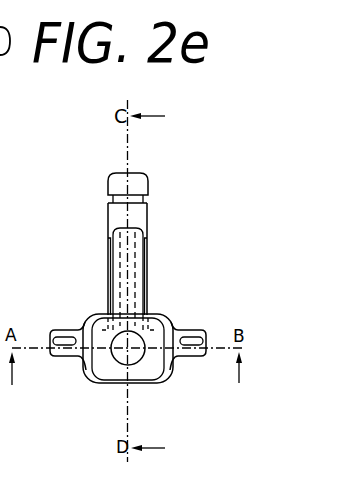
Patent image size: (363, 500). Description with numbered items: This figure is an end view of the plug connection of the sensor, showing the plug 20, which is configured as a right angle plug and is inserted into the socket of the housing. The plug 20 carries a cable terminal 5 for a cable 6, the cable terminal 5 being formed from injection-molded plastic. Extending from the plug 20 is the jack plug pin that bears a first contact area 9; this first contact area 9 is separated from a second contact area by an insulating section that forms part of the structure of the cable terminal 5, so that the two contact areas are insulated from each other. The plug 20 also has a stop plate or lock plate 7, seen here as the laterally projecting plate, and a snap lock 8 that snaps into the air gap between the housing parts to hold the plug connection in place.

The cable terminal 5 is at (113, 373).
The cable 6 is at (152, 372).
The stop plate or lock plate 7 is at (177, 332).
The snap lock 8 is at (137, 258).
The first contact area 9 is at (135, 212).
The plug 20 is at (158, 408).